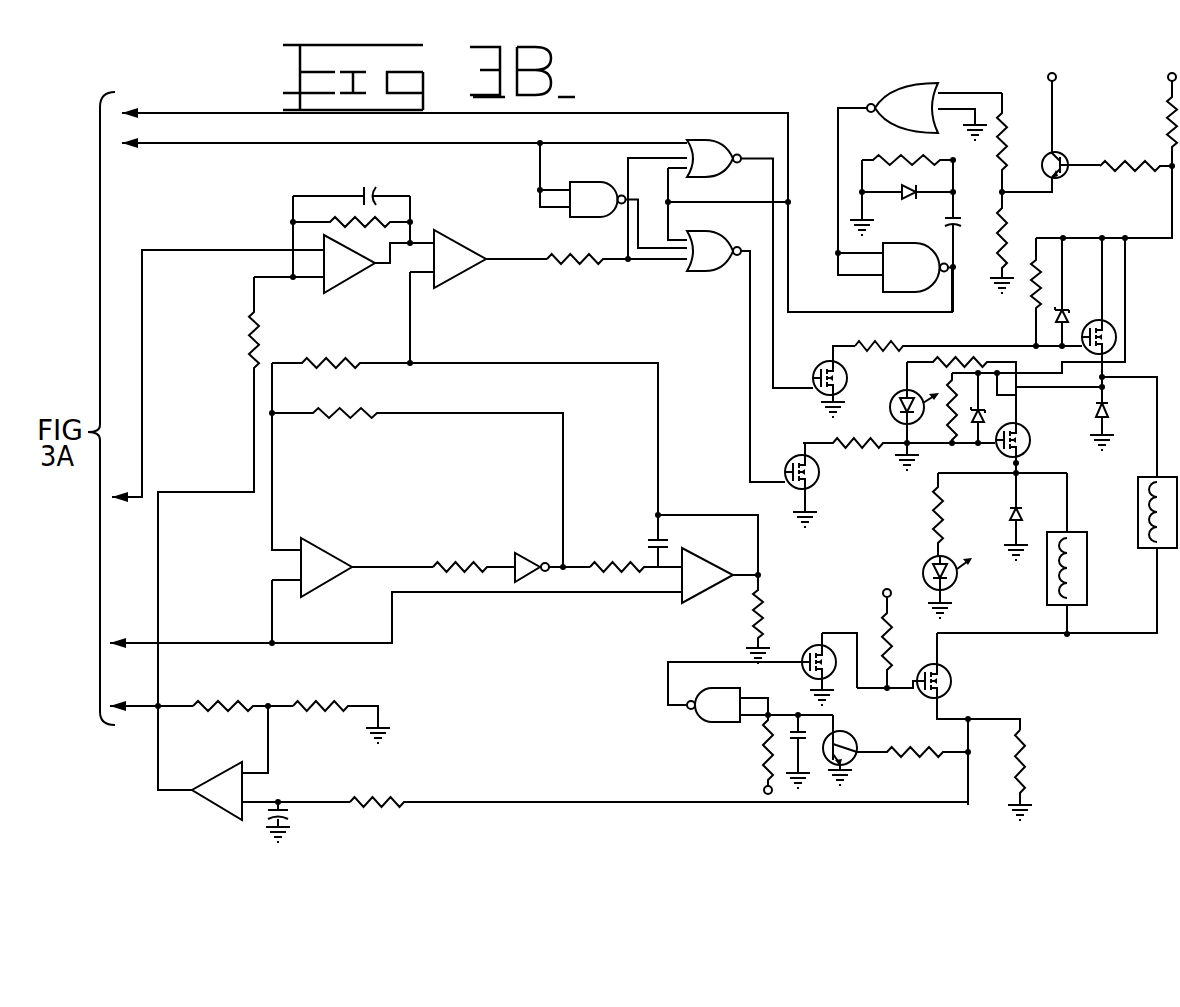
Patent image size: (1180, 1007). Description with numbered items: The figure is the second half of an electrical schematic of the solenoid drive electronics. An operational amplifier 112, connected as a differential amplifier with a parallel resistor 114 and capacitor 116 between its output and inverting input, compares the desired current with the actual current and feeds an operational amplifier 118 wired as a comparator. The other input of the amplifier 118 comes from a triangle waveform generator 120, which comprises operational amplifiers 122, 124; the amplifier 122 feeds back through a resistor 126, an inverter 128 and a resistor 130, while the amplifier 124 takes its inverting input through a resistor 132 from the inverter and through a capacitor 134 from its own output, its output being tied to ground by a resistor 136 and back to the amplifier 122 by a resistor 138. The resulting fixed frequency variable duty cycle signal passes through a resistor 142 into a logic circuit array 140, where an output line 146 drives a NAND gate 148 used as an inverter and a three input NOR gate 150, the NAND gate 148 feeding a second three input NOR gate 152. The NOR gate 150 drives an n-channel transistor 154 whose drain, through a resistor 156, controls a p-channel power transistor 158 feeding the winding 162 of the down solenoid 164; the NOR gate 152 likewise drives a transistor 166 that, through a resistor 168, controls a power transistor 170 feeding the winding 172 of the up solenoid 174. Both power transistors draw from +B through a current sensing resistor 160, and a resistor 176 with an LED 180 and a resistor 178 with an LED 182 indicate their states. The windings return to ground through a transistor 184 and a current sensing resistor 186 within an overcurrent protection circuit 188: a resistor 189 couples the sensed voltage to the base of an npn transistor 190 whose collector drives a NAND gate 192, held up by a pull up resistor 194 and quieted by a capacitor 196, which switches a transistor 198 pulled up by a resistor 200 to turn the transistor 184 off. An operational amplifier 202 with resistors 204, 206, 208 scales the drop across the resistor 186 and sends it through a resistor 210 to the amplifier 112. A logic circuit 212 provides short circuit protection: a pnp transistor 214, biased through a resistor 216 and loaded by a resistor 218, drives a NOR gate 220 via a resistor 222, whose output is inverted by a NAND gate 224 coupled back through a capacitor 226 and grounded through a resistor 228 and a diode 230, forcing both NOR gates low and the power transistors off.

The operational amplifier 112 is at (347, 282).
The resistor 114 is at (392, 225).
The capacitor 116 is at (380, 195).
The operational amplifier 118 is at (462, 260).
The triangle waveform generator 120 is at (533, 343).
The operational amplifier 122 is at (328, 550).
The operational amplifier 124 is at (706, 602).
The resistor 126 is at (471, 548).
The inverter 128 is at (533, 550).
The resistor 130 is at (352, 410).
The resistor 132 is at (625, 550).
The capacitor 134 is at (670, 544).
The resistor 136 is at (770, 612).
The resistor 138 is at (340, 357).
The logic circuit array 140 is at (678, 92).
The resistor 142 is at (590, 266).
The output line 146 is at (478, 142).
The NAND gate 148 is at (604, 180).
The three input NOR gate 150 is at (690, 136).
The three input NOR gate 152 is at (708, 273).
The n-channel FET type transistor 154 is at (822, 362).
The resistor 156 is at (866, 342).
The p-channel FET type power transistor 158 is at (1117, 327).
The current sensing resistor 160 is at (1166, 118).
The winding 162 is at (1140, 492).
The down solenoid 164 is at (1138, 504).
The n-channel FET type transistor 166 is at (820, 480).
The resistor 168 is at (880, 450).
The p-channel FET type power transistor 170 is at (1025, 424).
The winding 172 is at (1086, 570).
The up solenoid 174 is at (1088, 592).
The resistor 176 is at (957, 350).
The resistor 178 is at (937, 498).
The light emitting diode 180 is at (897, 393).
The light emitting diode 182 is at (929, 560).
The n-channel FET type transistor 184 is at (946, 668).
The current sensing resistor 186 is at (1028, 744).
The overcurrent protection circuit 188 is at (636, 655).
The resistor 189 is at (904, 760).
The npn type transistor 190 is at (857, 732).
The two input NAND gate 192 is at (722, 688).
The pull up resistor 194 is at (762, 734).
The capacitor 196 is at (790, 741).
The n-channel FET type transistor 198 is at (806, 646).
The pull up resistor 200 is at (892, 645).
The operational amplifier 202 is at (244, 790).
The resistor 204 is at (406, 800).
The resistor 206 is at (348, 699).
The resistor 208 is at (232, 699).
The resistor 210 is at (262, 329).
The logic circuit 212 is at (854, 80).
The pnp type transistor 214 is at (1060, 148).
The resistor 216 is at (1132, 160).
The resistor 218 is at (1046, 252).
The NOR gate 220 is at (930, 123).
The resistor 222 is at (1014, 135).
The two input NAND gate 224 is at (928, 280).
The capacitor 226 is at (1004, 208).
The resistor 228 is at (903, 217).
The diode 230 is at (923, 198).